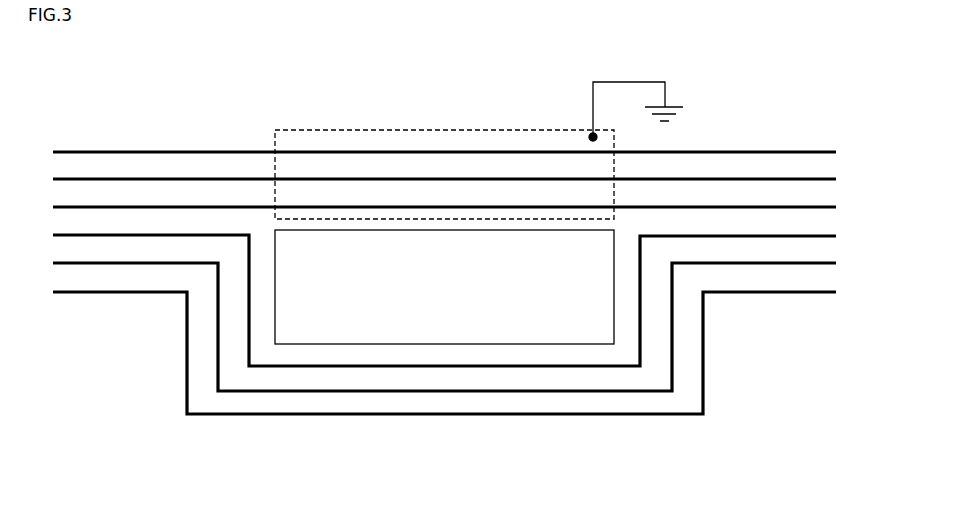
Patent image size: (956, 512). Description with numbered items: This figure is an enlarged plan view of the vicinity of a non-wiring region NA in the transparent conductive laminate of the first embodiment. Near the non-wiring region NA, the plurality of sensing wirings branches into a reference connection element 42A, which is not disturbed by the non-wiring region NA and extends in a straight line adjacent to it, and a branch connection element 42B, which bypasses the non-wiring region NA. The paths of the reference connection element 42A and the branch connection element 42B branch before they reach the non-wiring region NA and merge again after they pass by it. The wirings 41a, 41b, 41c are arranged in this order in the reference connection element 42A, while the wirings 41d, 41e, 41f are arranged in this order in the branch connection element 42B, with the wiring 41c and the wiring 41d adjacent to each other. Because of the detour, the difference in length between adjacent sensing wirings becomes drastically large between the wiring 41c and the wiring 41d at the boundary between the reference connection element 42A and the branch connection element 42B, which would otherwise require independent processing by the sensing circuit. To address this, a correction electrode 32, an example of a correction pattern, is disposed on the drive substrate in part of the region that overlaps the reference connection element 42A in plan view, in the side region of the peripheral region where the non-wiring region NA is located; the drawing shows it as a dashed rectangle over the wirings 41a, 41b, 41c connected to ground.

The reference connection element 42A is at (248, 108).
The branch connection element 42B is at (466, 466).
The wiring 41a is at (110, 151).
The wiring 41b is at (160, 178).
The wiring 41c is at (210, 206).
The wiring 41d is at (455, 368).
The wiring 41e is at (393, 392).
The wiring 41f is at (327, 415).
The correction electrode 32 is at (467, 130).
The non-wiring region NA is at (545, 345).